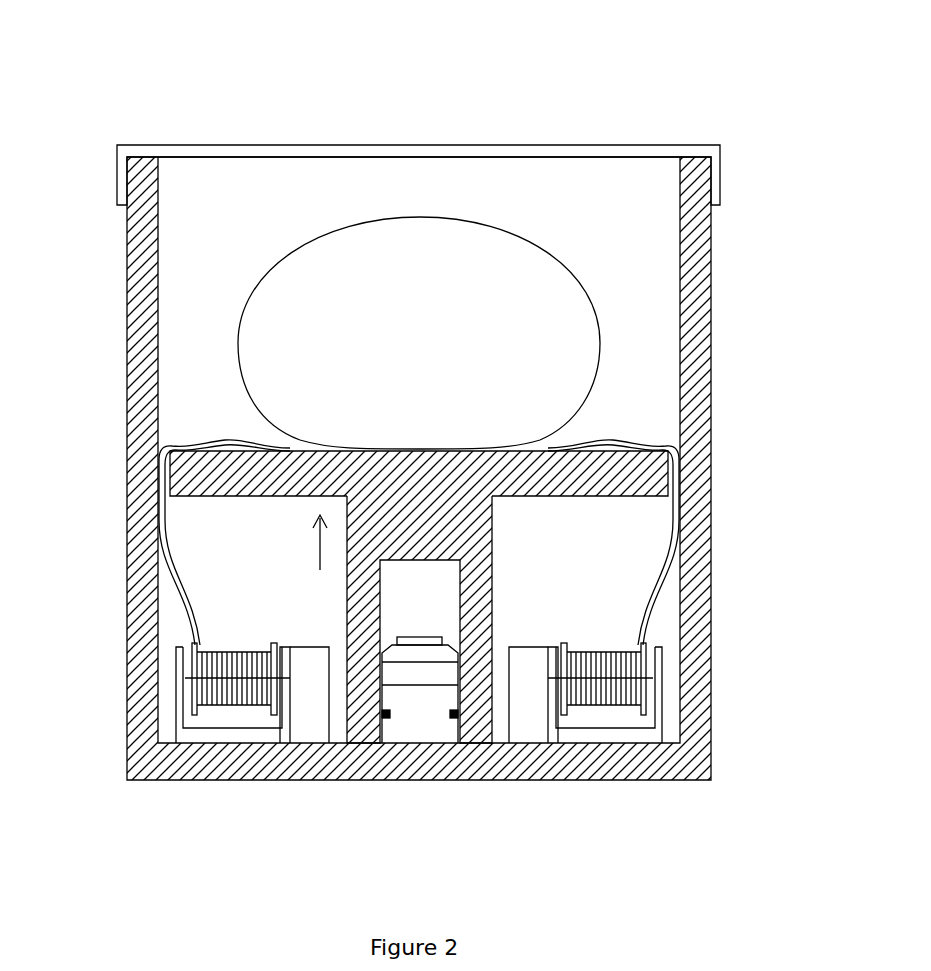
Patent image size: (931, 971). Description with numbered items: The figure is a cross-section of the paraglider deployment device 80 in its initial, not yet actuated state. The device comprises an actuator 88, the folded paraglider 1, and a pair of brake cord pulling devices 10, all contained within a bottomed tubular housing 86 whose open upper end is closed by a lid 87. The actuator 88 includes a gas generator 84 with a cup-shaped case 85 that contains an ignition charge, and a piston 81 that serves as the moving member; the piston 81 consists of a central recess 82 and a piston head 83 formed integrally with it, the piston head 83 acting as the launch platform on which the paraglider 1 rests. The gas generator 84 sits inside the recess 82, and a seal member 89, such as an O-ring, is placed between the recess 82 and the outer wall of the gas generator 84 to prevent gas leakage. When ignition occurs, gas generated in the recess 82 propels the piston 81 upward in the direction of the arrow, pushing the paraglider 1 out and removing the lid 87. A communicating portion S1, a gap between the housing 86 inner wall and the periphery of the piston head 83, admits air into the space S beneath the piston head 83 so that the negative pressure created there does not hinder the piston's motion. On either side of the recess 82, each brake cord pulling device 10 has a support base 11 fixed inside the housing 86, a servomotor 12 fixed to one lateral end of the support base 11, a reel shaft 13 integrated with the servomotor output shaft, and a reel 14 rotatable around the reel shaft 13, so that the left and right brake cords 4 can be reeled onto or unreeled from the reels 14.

The paraglider deployment device 80 is at (182, 48).
The paraglider 1 is at (418, 248).
The lid 87 is at (487, 145).
The housing 86 is at (692, 235).
The brake cord 4 is at (230, 445).
The communicating portion S1 is at (166, 437).
The space S is at (230, 527).
The reel 14 is at (272, 645).
The reel shaft 13 is at (290, 678).
The servomotor 12 is at (311, 688).
The support base 11 is at (208, 735).
The brake cord pulling device 10 is at (168, 685).
The seal member 89 is at (385, 720).
The gas generator 84 is at (440, 727).
The case 85 is at (440, 672).
The piston head 83 is at (653, 473).
The recess 82 is at (493, 592).
The piston 81 is at (509, 597).
The actuator 88 is at (609, 612).